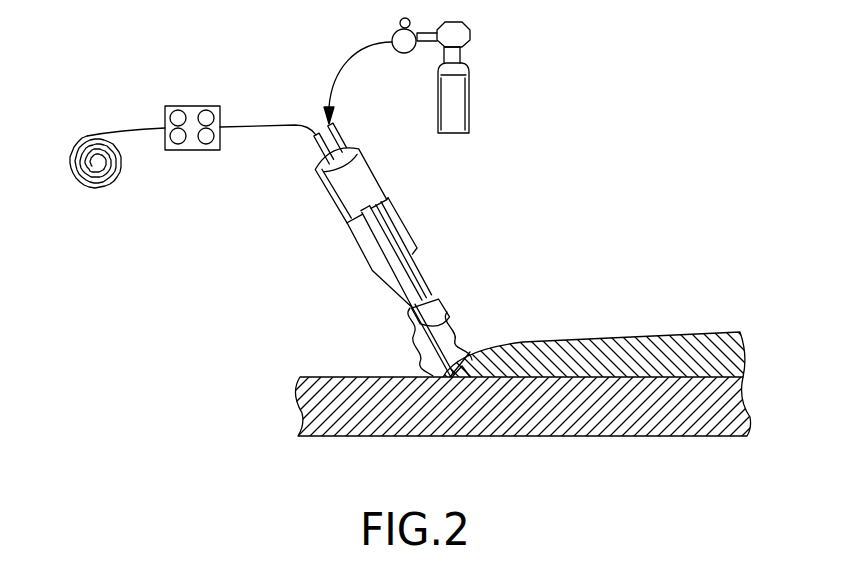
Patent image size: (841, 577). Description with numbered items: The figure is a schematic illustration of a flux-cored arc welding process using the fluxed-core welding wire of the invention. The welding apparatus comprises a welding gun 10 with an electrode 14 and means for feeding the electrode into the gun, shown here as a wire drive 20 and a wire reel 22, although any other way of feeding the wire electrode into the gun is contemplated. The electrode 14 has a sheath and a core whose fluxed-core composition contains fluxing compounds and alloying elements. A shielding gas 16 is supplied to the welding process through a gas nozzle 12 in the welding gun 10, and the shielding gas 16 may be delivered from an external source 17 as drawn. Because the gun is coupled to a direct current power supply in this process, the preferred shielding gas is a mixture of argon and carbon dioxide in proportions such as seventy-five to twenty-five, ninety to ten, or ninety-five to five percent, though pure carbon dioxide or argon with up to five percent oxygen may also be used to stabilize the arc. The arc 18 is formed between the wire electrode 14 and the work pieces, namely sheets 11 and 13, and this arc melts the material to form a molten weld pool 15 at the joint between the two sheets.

The welding gun 10 is at (332, 208).
The sheet 11 is at (730, 353).
The gas nozzle 12 is at (392, 222).
The sheet 13 is at (733, 410).
The electrode 14 is at (437, 307).
The molten weld pool 15 is at (470, 368).
The shielding gas 16 is at (415, 338).
The external source 17 is at (458, 90).
The arc 18 is at (462, 363).
The wire drive 20 is at (192, 106).
The wire reel 22 is at (83, 134).